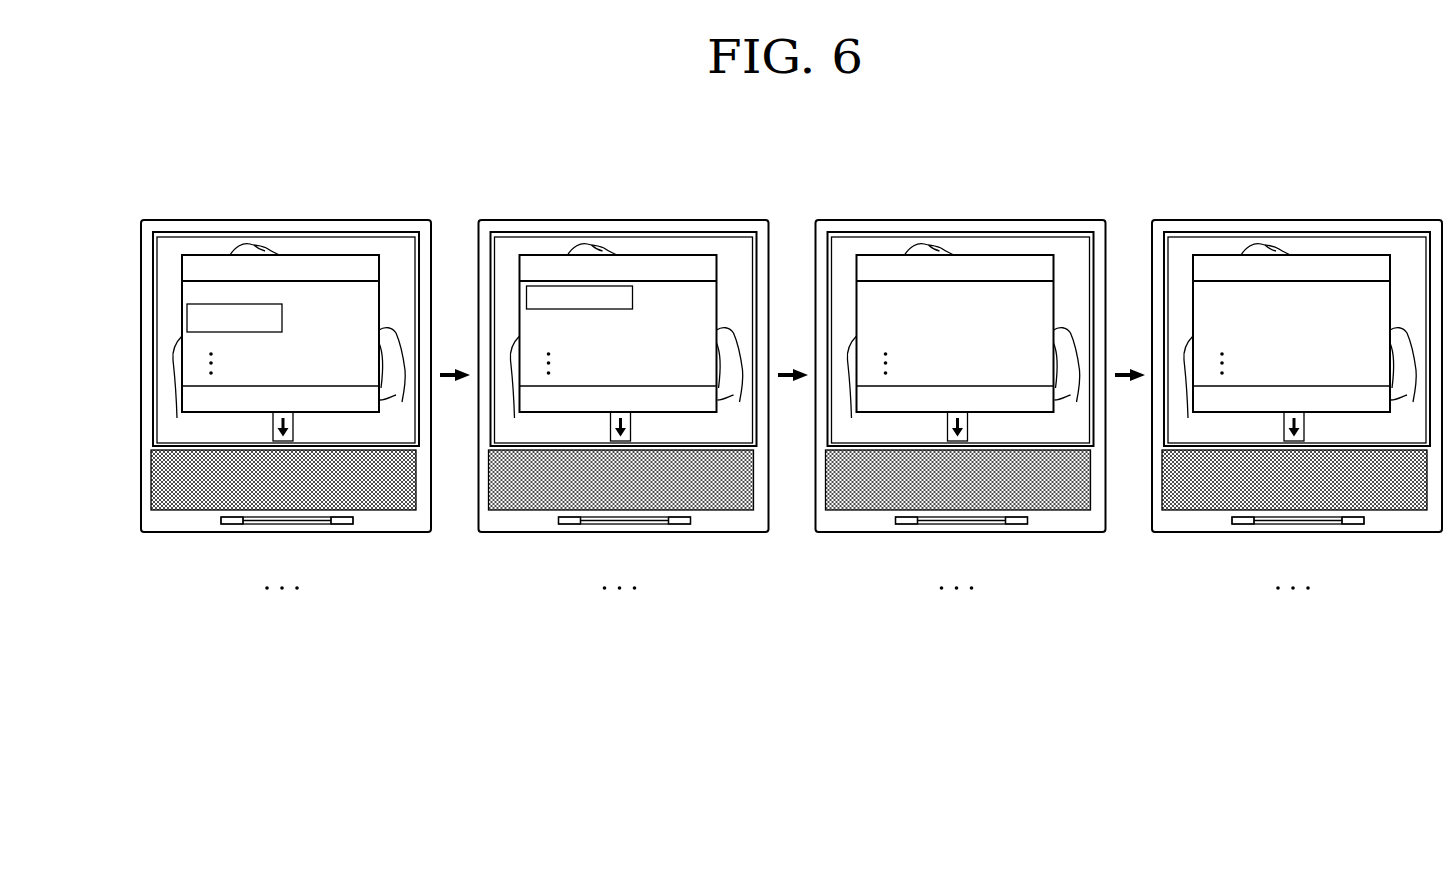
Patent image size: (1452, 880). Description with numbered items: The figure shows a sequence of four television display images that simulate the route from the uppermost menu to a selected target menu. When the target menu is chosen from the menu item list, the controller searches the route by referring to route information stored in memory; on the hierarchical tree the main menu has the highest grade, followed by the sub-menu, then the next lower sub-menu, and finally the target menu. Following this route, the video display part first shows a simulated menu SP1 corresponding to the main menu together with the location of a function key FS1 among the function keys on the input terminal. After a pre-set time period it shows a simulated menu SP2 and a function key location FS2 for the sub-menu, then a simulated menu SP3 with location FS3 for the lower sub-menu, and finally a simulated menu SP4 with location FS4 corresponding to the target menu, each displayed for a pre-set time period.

The simulated menu SP1 is at (357, 255).
The simulated menu SP2 is at (618, 288).
The simulated menu SP3 is at (955, 288).
The simulated menu SP4 is at (1291, 288).
The location of function key FS1 is at (293, 442).
The location of function key FS2 is at (629, 492).
The location of function key FS3 is at (966, 492).
The location of function key FS4 is at (1302, 492).